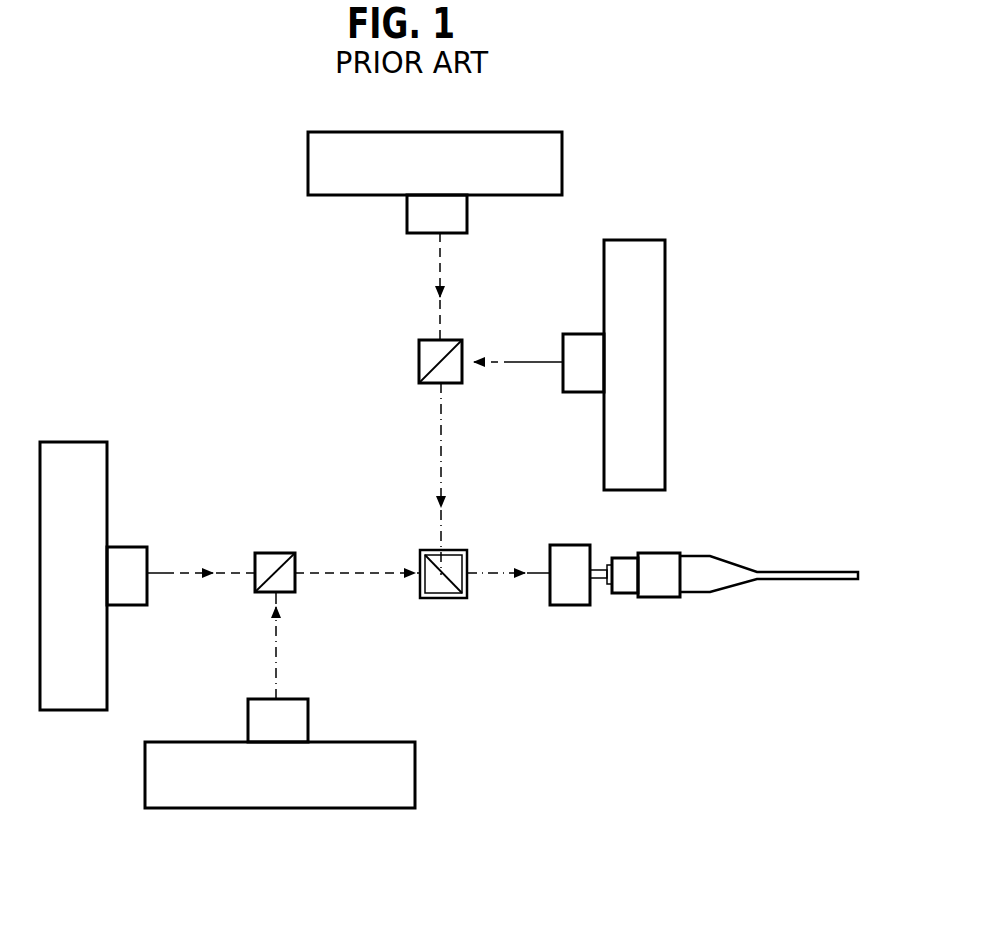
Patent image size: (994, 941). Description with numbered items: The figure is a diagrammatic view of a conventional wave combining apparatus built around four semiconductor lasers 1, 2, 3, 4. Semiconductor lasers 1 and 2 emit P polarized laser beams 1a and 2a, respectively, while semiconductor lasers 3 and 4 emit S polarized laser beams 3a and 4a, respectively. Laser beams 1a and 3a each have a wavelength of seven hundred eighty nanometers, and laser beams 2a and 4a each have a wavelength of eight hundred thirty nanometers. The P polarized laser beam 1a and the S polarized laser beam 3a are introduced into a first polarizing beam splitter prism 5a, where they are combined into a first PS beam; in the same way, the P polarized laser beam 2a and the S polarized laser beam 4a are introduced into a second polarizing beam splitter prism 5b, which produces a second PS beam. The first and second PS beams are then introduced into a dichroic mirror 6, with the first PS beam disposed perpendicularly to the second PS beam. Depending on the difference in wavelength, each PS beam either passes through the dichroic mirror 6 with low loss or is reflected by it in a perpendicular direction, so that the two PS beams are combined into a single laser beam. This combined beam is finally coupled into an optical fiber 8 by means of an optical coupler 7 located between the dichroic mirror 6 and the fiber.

The semiconductor laser 1 is at (562, 172).
The laser beam 1a is at (441, 273).
The semiconductor laser 2 is at (77, 442).
The laser beam 2a is at (170, 573).
The semiconductor laser 3 is at (665, 285).
The laser beam 3a is at (537, 365).
The semiconductor laser 4 is at (415, 780).
The laser beam 4a is at (276, 641).
The first polarizing beam splitter prism 5a is at (419, 362).
The second polarizing beam splitter prism 5b is at (278, 553).
The dichroic mirror 6 is at (457, 598).
The optical coupler 7 is at (619, 605).
The optical fiber 8 is at (805, 580).